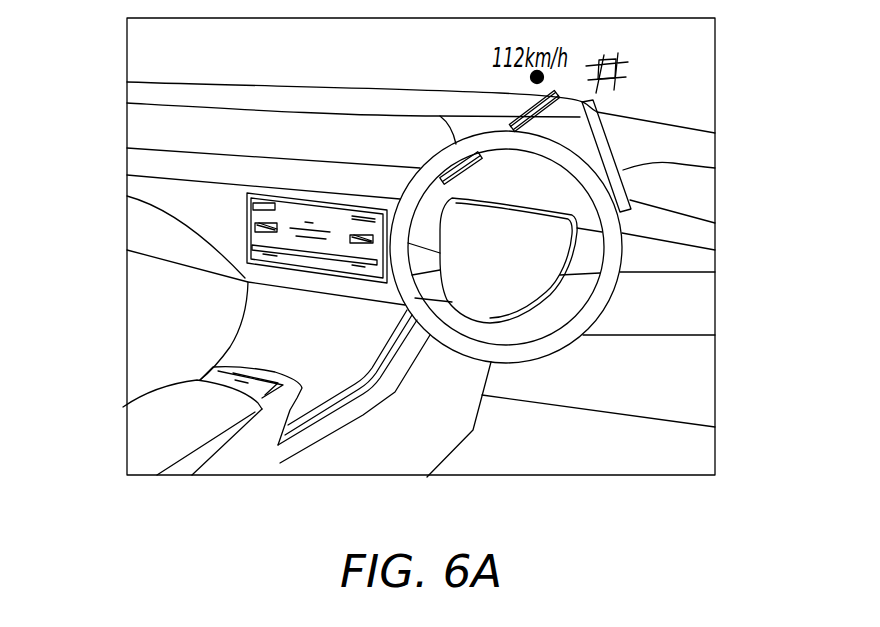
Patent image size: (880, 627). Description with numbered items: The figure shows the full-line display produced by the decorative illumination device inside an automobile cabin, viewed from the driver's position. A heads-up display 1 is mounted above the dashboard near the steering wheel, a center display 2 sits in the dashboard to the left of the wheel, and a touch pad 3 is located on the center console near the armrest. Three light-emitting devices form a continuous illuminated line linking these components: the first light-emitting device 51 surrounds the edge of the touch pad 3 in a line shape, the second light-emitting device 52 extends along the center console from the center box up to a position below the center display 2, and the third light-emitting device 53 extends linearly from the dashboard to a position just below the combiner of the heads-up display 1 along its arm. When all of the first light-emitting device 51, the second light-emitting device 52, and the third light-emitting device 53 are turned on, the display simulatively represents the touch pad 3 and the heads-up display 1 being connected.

The heads-up display 1 is at (625, 72).
The center display 2 is at (255, 237).
The touch pad 3 is at (200, 378).
The first light-emitting device 51 is at (260, 408).
The second light-emitting device 52 is at (353, 386).
The third light-emitting device 53 is at (597, 121).